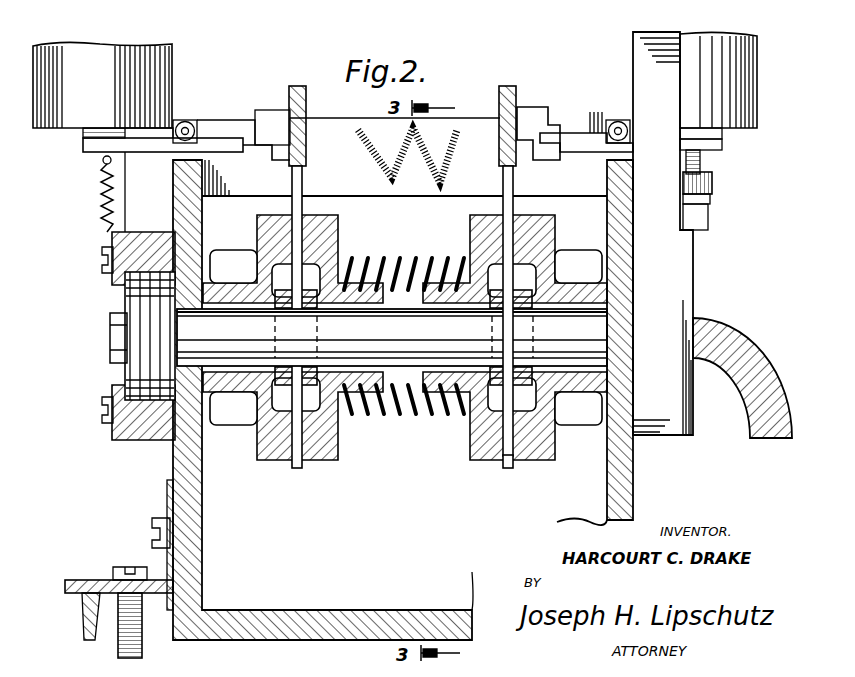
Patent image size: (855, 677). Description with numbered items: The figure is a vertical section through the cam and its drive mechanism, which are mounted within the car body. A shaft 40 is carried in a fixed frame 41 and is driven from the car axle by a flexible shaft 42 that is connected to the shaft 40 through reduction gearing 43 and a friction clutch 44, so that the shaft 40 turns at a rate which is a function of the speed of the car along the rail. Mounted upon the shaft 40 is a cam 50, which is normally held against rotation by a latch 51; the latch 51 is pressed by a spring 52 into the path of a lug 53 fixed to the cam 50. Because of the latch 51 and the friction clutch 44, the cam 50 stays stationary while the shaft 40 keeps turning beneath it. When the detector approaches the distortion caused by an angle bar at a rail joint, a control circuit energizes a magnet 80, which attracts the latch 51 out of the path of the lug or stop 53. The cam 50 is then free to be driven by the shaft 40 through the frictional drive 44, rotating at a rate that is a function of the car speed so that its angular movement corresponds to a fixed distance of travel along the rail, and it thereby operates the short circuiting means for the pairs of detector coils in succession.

The shaft 40 is at (392, 337).
The fixed frame 41 is at (193, 566).
The flexible shaft 42 is at (737, 328).
The reduction gearing 43 is at (678, 288).
The friction clutch 44 is at (532, 462).
The cam 50 is at (516, 168).
The latch 51 is at (574, 138).
The spring 52 is at (619, 121).
The lug 53 is at (537, 110).
The magnet 80 is at (738, 97).